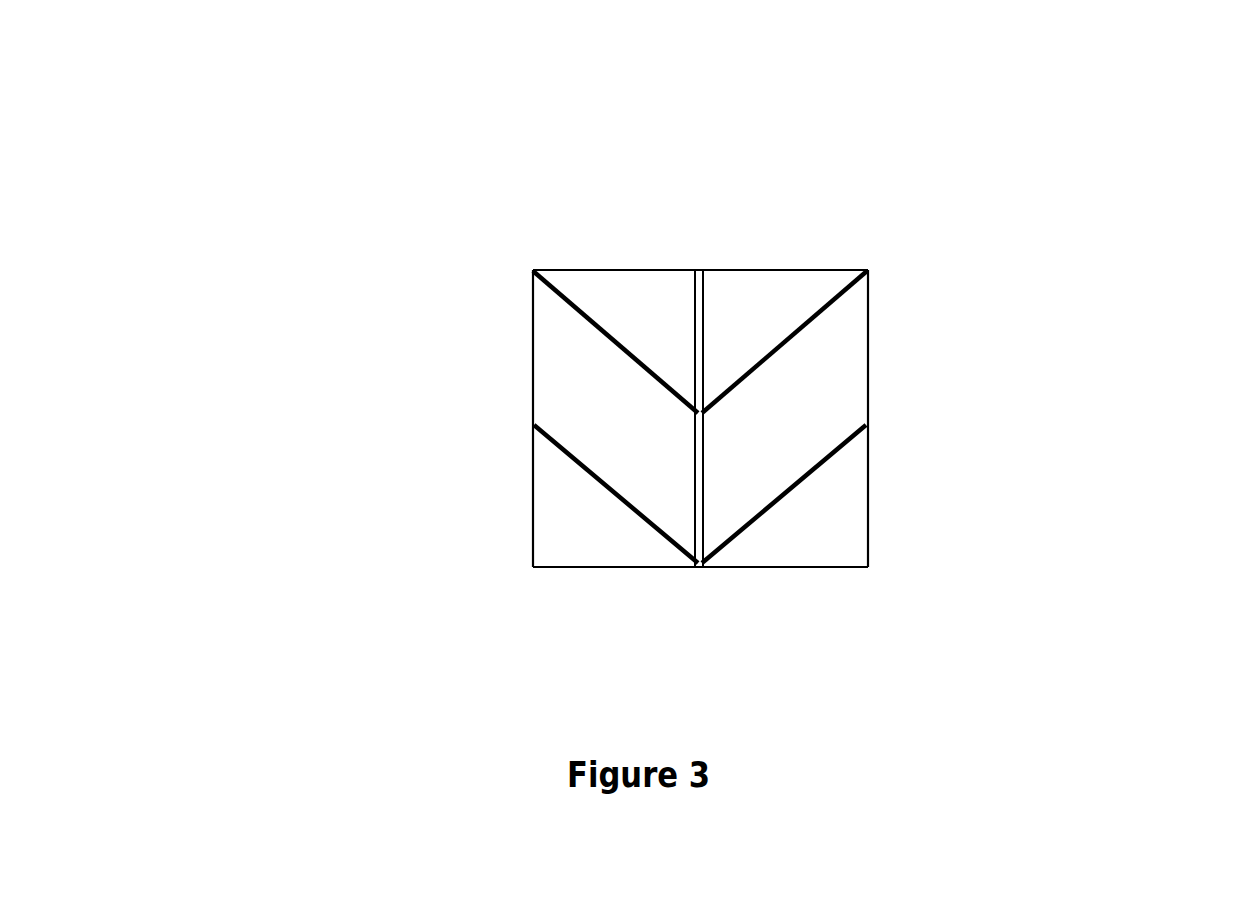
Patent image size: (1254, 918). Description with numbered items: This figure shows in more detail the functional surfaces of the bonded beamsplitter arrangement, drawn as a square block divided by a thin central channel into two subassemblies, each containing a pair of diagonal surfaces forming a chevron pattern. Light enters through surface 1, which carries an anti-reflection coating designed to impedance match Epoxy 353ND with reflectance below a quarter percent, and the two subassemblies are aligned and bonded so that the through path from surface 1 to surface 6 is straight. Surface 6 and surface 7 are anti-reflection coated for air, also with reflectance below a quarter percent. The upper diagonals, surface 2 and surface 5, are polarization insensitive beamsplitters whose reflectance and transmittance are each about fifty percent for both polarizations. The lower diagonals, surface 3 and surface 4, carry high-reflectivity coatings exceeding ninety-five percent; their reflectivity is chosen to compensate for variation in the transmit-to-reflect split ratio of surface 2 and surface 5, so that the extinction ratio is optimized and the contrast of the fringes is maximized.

The surface 1 is at (530, 347).
The surface 2 is at (575, 296).
The surface 3 is at (590, 485).
The surface 4 is at (824, 470).
The surface 5 is at (833, 298).
The surface 6 is at (868, 328).
The surface 7 is at (743, 269).